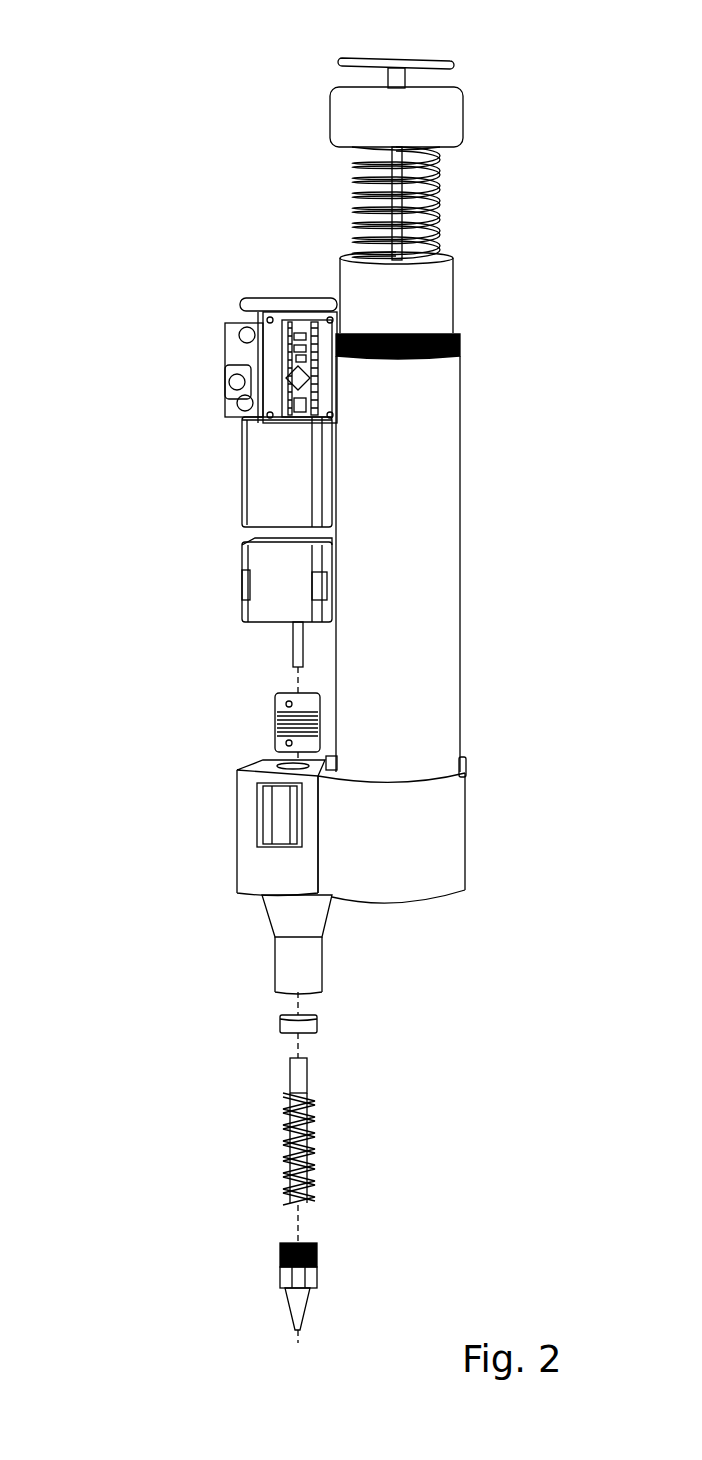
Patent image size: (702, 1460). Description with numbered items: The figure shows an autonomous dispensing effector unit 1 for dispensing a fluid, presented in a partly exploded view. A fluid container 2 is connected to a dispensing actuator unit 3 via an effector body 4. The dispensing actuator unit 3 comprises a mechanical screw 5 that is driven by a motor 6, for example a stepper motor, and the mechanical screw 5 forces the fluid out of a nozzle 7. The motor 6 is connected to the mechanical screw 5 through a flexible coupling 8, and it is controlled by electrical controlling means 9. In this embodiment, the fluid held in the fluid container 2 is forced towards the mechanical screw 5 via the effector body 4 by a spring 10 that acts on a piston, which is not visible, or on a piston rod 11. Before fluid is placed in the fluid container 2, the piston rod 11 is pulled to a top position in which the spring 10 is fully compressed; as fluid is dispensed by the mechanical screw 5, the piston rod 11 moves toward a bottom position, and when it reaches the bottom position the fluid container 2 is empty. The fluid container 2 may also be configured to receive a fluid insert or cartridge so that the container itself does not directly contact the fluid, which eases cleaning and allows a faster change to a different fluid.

The autonomous dispensing effector unit 1 is at (118, 122).
The fluid container 2 is at (437, 557).
The dispensing actuator unit 3 is at (275, 878).
The effector body 4 is at (400, 888).
The mechanical screw 5 is at (290, 1148).
The motor 6 is at (263, 585).
The nozzle 7 is at (300, 1296).
The flexible coupling 8 is at (275, 728).
The electrical controlling means 9 is at (267, 362).
The spring 10 is at (440, 197).
The piston rod 11 is at (427, 63).